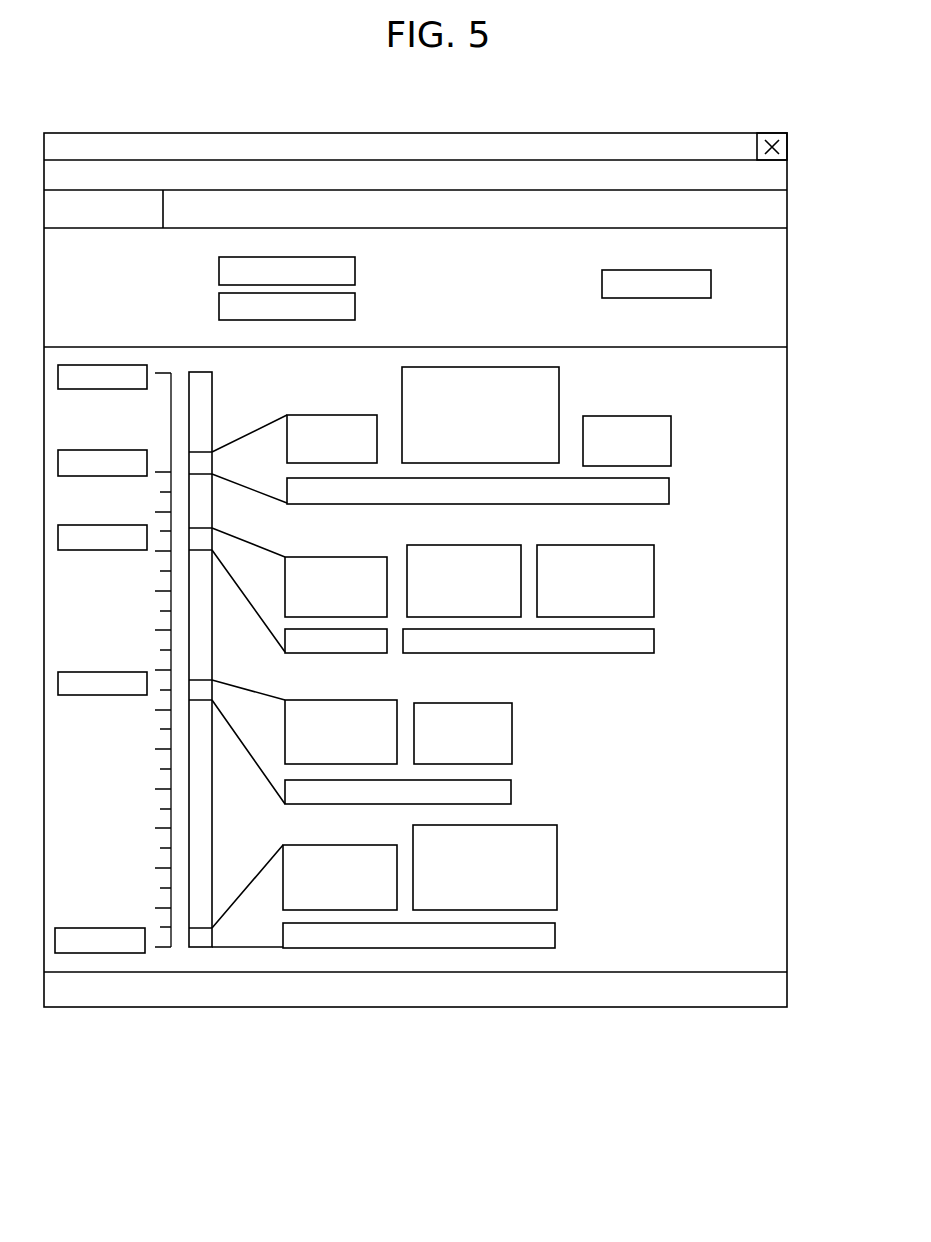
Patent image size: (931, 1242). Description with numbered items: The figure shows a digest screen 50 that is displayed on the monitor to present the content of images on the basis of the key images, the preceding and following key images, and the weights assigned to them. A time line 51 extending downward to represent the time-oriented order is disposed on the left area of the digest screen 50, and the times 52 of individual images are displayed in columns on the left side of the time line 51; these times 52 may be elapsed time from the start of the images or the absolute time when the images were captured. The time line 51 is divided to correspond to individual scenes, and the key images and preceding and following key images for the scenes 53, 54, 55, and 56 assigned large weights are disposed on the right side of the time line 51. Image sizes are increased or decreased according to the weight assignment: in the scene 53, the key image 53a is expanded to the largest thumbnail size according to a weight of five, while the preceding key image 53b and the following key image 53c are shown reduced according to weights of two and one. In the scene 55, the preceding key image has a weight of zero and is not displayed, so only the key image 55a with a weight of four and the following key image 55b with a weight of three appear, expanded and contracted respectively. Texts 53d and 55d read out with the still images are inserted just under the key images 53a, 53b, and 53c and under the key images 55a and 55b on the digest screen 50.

The digest screen 50 is at (787, 308).
The time line 51 is at (157, 950).
The times 52 is at (110, 955).
The scene 53 is at (695, 365).
The key image 53a is at (478, 367).
The preceding key image 53b is at (337, 415).
The following key image 53c is at (627, 416).
The text 53d is at (405, 504).
The scene 54 is at (695, 543).
The scene 55 is at (557, 700).
The key image 55a is at (362, 700).
The following key image 55b is at (488, 703).
The text 55d is at (322, 806).
The scene 56 is at (583, 822).